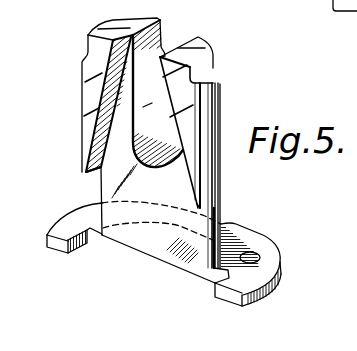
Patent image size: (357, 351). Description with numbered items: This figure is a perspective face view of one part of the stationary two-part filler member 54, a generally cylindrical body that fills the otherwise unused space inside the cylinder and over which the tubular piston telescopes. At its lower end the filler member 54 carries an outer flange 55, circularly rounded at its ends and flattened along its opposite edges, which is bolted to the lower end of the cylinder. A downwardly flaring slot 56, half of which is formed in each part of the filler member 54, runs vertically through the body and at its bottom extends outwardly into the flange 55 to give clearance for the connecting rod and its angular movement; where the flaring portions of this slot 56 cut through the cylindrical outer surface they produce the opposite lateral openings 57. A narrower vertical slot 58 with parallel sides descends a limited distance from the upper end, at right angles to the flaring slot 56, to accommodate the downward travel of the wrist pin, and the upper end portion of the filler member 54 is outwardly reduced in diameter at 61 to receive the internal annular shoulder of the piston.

The filler member 54 is at (223, 100).
The outer flange 55 is at (258, 235).
The downwardly flaring slot 56 is at (96, 132).
The lateral openings 57 is at (100, 172).
The vertical slot 58 is at (163, 94).
The outwardly reduced diameter portion 61 is at (88, 48).